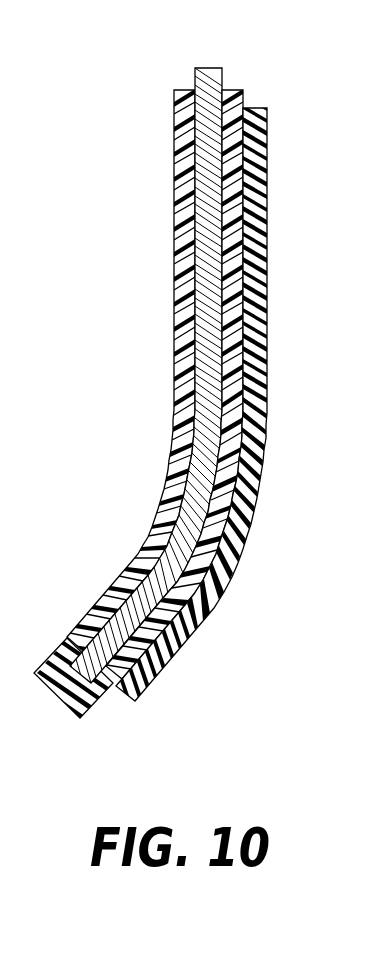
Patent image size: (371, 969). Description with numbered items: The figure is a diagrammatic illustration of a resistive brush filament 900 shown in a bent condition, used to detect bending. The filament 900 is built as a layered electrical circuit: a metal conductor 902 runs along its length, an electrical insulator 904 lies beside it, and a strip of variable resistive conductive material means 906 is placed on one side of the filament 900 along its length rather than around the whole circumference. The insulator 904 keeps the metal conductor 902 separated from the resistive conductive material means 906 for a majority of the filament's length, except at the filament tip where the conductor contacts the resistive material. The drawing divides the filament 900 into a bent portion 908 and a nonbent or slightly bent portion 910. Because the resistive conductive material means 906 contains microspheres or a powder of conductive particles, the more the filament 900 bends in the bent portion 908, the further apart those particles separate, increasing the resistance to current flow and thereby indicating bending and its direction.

The resistive brush filament 900 is at (170, 138).
The metal conductor 902 is at (206, 68).
The electrical insulator 904 is at (237, 89).
The resistive conductive material means 906 is at (256, 108).
The bent portion 908 is at (299, 449).
The nonbent or slightly bent portion 910 is at (296, 107).